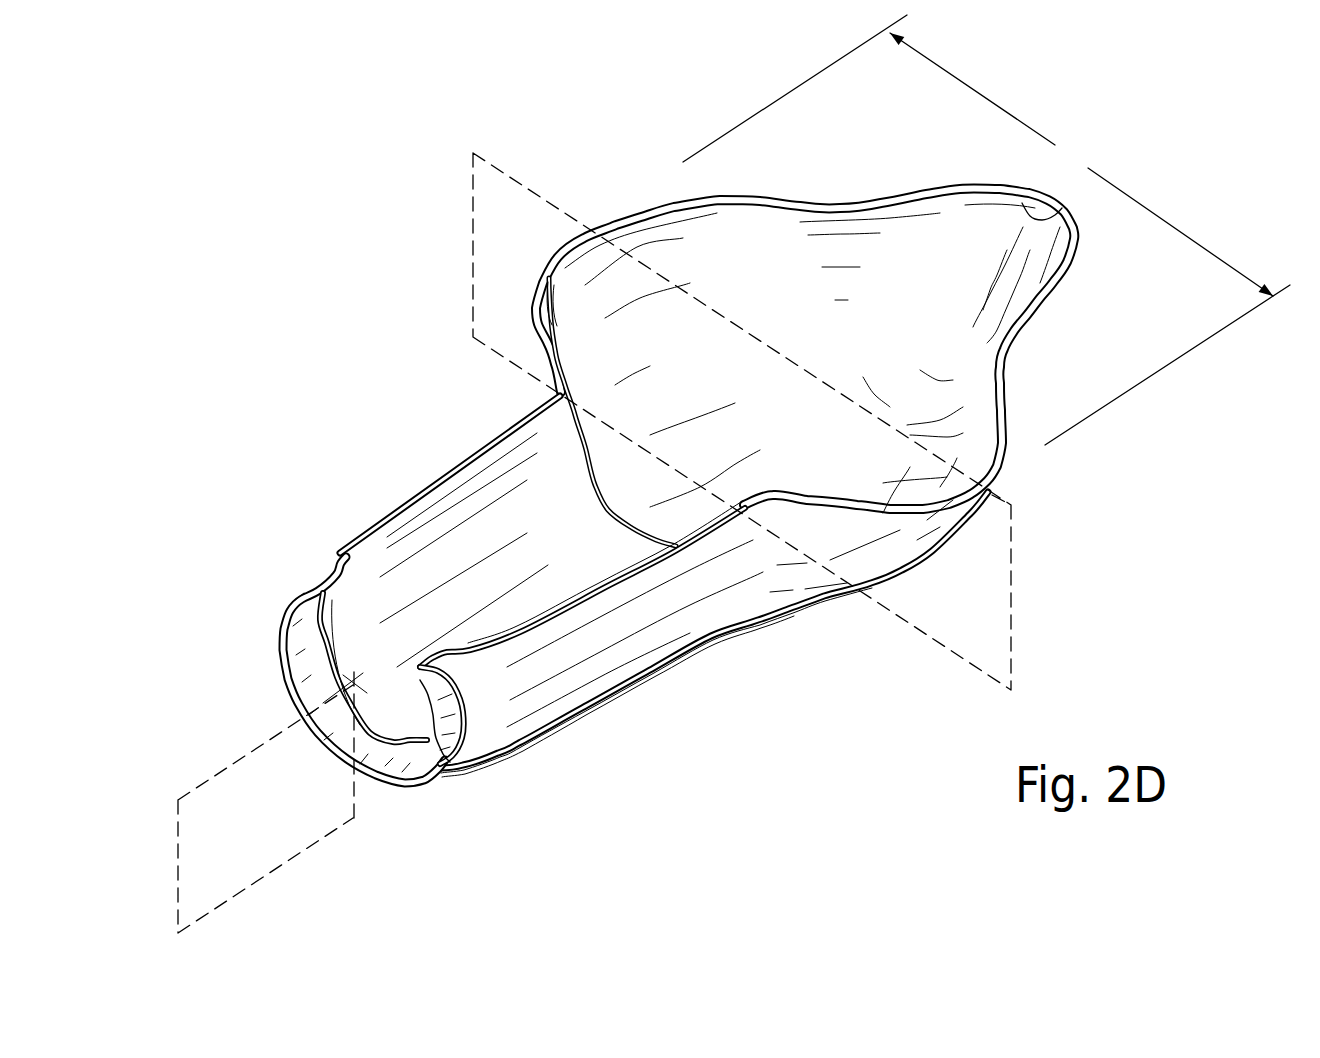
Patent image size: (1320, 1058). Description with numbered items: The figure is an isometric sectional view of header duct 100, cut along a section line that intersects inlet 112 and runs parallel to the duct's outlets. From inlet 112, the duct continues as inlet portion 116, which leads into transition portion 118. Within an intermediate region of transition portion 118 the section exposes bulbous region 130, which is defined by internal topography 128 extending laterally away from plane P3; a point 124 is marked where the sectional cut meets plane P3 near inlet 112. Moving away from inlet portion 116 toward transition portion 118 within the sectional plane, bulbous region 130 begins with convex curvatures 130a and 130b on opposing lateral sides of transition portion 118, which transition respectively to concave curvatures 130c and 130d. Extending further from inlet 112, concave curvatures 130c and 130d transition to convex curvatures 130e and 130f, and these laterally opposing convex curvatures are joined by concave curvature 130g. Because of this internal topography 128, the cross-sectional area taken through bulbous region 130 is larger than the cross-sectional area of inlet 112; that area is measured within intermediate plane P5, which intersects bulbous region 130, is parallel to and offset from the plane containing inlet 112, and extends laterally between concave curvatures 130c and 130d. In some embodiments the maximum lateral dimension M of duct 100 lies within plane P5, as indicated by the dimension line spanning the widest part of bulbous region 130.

The header duct 100 is at (653, 443).
The inlet 112 is at (254, 652).
The inlet portion 116 is at (543, 793).
The transition portion 118 is at (960, 600).
The axis point in plane P3 124 is at (355, 683).
The internal topography 128 is at (706, 505).
The bulbous intermediate region 130 is at (843, 332).
The convex curvature 130a is at (793, 498).
The convex curvature 130b is at (587, 377).
The concave curvature 130c is at (913, 481).
The concave curvature 130d is at (587, 230).
The convex curvature 130e is at (995, 355).
The convex curvature 130f is at (843, 213).
The concave curvature 130g is at (1053, 215).
The maximum lateral dimension M is at (986, 230).
The plane P3 is at (180, 818).
The intermediate plane P5 is at (1012, 523).